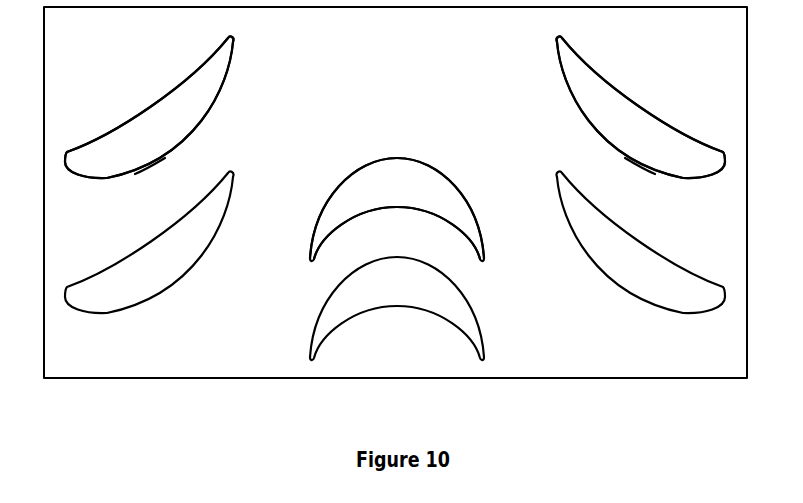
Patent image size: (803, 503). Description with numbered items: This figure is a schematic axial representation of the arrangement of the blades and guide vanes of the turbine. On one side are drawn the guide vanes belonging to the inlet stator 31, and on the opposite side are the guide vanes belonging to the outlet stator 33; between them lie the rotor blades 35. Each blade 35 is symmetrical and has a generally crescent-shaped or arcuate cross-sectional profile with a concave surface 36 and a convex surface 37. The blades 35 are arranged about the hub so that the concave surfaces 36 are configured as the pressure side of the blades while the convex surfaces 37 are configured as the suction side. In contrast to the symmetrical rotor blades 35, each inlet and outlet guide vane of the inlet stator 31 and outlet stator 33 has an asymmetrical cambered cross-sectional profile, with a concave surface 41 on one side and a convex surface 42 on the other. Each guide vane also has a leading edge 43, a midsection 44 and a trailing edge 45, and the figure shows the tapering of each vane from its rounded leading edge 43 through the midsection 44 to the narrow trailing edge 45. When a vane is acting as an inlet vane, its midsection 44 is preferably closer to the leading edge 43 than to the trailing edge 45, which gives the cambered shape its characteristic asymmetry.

The inlet stator 31 is at (203, 87).
The outlet stator 33 is at (585, 83).
The blade 35 is at (403, 172).
The concave surface 36 is at (373, 215).
The convex surface 37 is at (353, 182).
The concave surface 41 is at (148, 107).
The convex surface 42 is at (187, 135).
The leading edge 43 is at (67, 168).
The midsection 44 is at (160, 160).
The trailing edge 45 is at (232, 36).